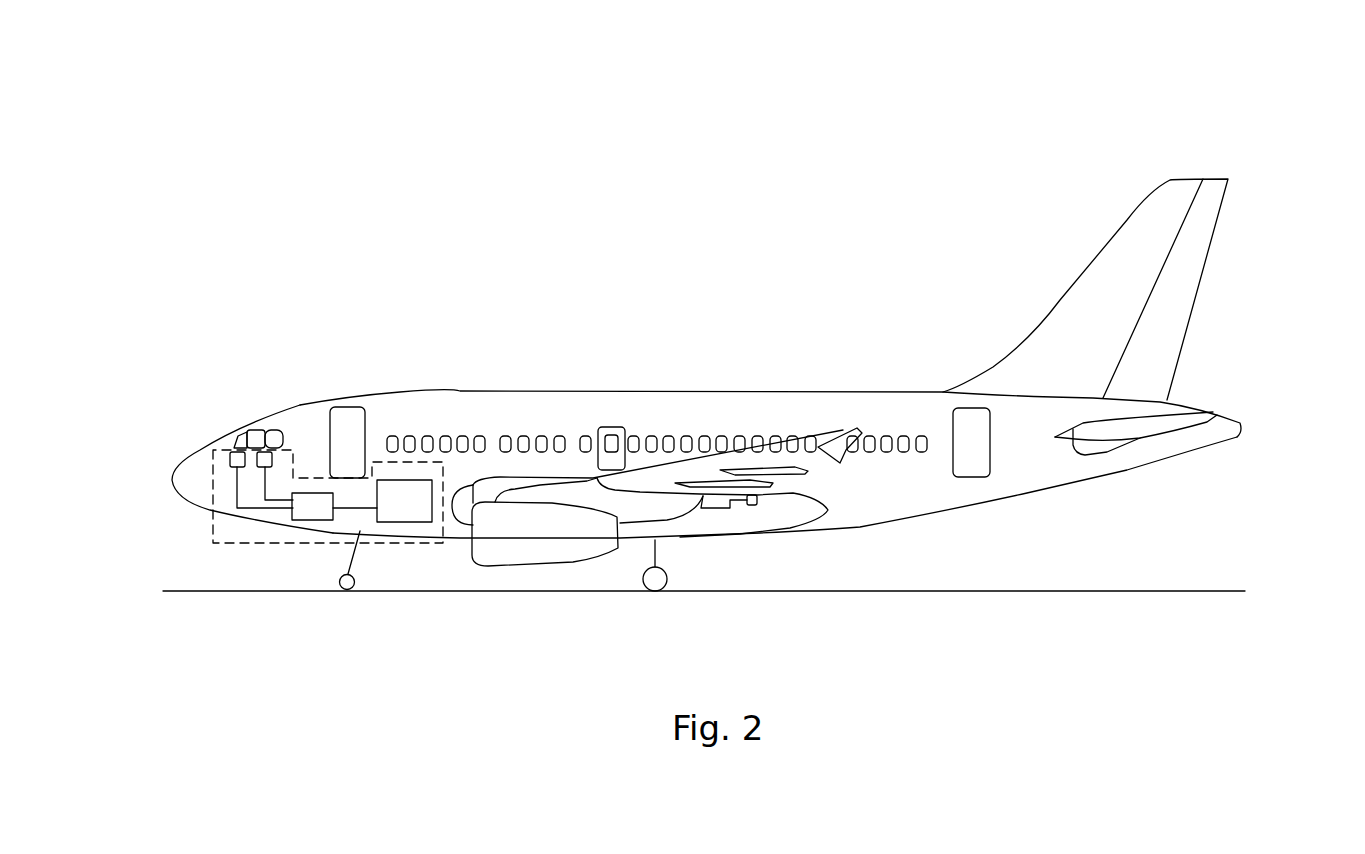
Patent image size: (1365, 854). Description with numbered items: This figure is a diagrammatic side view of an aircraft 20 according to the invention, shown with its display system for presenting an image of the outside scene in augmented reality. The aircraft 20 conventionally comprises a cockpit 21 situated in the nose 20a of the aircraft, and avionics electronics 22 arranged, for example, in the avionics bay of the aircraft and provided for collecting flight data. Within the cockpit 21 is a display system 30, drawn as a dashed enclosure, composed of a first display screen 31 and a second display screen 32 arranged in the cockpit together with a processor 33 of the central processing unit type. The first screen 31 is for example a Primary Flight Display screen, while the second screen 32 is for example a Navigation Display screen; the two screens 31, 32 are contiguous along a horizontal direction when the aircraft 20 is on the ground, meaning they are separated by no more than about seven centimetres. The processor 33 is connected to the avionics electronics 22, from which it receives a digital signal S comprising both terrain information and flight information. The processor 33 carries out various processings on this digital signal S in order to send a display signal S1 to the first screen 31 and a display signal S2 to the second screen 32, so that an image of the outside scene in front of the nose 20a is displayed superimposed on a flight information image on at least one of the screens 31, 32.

The aircraft 20 is at (1270, 233).
The nose 20a is at (172, 480).
The cockpit 21 is at (227, 416).
The avionics electronics 22 is at (400, 518).
The display system 30 is at (315, 460).
The first display screen 31 is at (230, 452).
The second display screen 32 is at (293, 452).
The processor 33 is at (297, 518).
The display signal S1 is at (237, 506).
The display signal S2 is at (265, 498).
The digital signal S is at (347, 508).